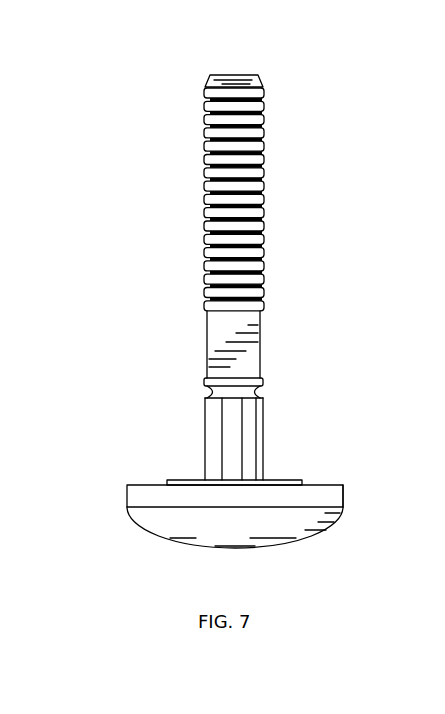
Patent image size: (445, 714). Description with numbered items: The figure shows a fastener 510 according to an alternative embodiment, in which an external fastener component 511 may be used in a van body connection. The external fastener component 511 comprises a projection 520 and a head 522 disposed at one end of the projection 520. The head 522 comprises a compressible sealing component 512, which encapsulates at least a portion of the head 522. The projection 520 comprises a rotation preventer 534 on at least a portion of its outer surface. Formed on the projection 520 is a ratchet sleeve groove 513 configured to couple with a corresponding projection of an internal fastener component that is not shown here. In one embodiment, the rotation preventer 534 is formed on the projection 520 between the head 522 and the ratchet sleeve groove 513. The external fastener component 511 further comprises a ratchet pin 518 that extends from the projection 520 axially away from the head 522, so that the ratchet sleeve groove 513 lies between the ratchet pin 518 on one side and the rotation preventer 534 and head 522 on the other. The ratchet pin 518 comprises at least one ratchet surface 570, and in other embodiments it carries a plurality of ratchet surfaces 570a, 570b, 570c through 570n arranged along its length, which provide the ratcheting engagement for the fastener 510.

The fastener 510 is at (152, 256).
The ratchet pin 518 is at (200, 72).
The ratchet surface 570 is at (278, 120).
The ratchet surface 570a is at (203, 106).
The ratchet surface 570b is at (204, 119).
The ratchet surface 570c is at (204, 133).
The ratchet surface 570n is at (204, 213).
The ratchet sleeve groove 513 is at (198, 387).
The projection 520 is at (283, 432).
The rotation preventer 534 is at (205, 435).
The compressible sealing component 512 is at (126, 493).
The head 522 is at (353, 503).
The external fastener component 511 is at (180, 552).